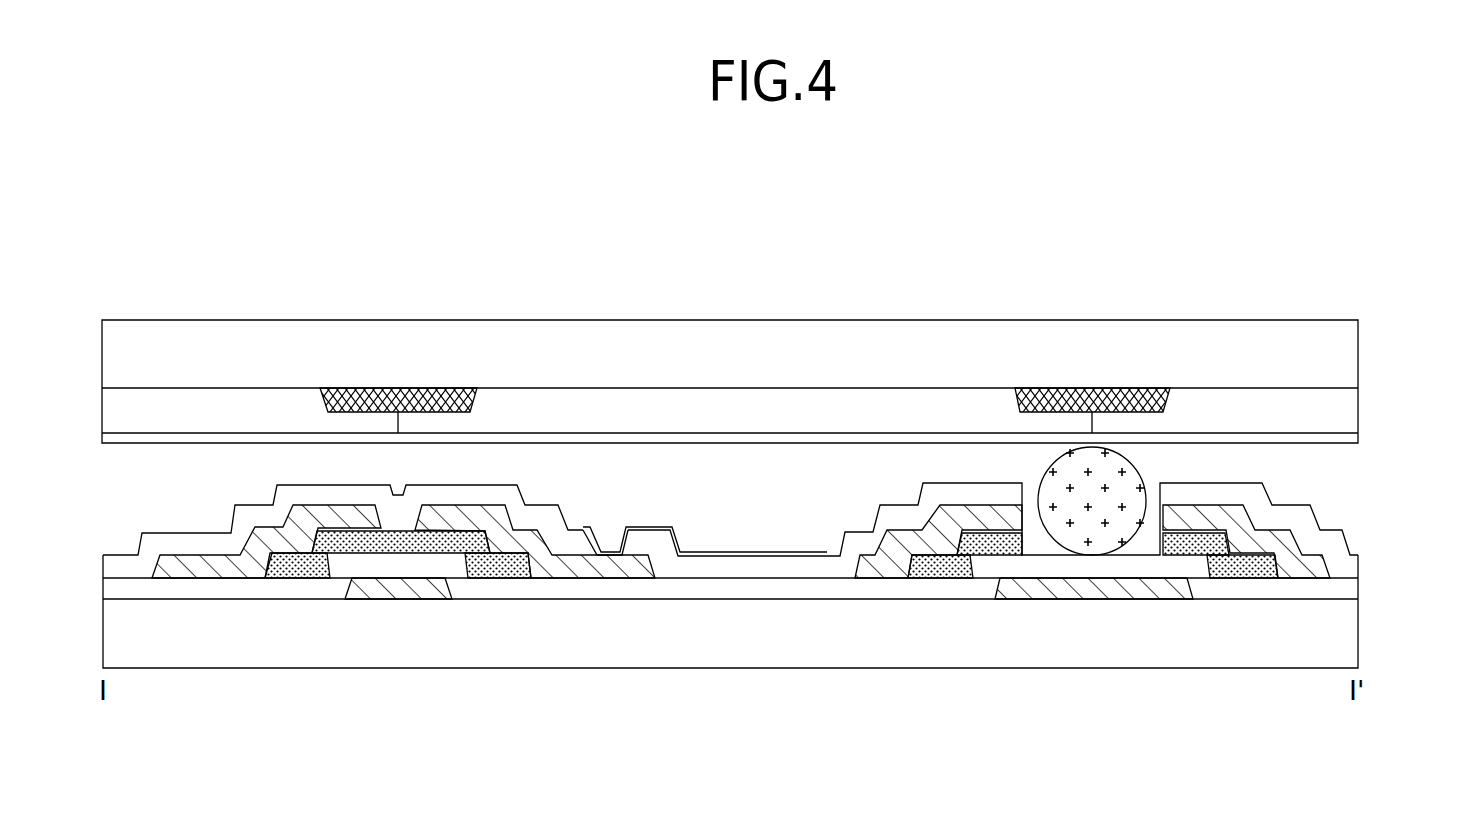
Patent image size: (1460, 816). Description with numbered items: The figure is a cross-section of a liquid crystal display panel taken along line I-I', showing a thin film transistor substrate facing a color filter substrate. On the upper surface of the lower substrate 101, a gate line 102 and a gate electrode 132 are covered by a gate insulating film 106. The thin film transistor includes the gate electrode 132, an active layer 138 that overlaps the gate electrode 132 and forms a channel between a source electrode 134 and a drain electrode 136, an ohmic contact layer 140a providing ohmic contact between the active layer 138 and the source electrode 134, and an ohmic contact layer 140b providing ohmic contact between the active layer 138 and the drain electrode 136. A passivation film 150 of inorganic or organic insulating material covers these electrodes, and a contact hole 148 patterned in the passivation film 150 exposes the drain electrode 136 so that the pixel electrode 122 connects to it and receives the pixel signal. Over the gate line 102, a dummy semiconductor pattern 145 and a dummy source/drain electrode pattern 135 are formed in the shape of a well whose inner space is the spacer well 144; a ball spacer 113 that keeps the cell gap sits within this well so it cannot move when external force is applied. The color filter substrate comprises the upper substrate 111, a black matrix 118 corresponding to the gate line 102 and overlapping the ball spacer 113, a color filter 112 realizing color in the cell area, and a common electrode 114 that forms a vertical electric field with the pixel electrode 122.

The lower substrate 101 is at (1358, 632).
The gate line 102 is at (1063, 580).
The gate insulating film 106 is at (1358, 585).
The upper substrate 111 is at (1358, 355).
The color filter 112 is at (1358, 410).
The ball spacer 113 is at (1053, 465).
The common electrode 114 is at (1358, 437).
The black matrix 118 is at (1038, 388).
The pixel electrode 122 is at (765, 552).
The gate electrode 132 is at (400, 590).
The source electrode 134 is at (190, 578).
The dummy source/drain electrode pattern 135 is at (1297, 565).
The drain electrode 136 is at (628, 572).
The active layer 138 is at (490, 556).
The ohmic contact layer 140a is at (300, 553).
The ohmic contact layer 140b is at (513, 553).
The spacer well 144 is at (1148, 540).
The dummy semiconductor pattern 145 is at (957, 555).
The contact hole 148 is at (608, 542).
The passivation film 150 is at (1358, 565).